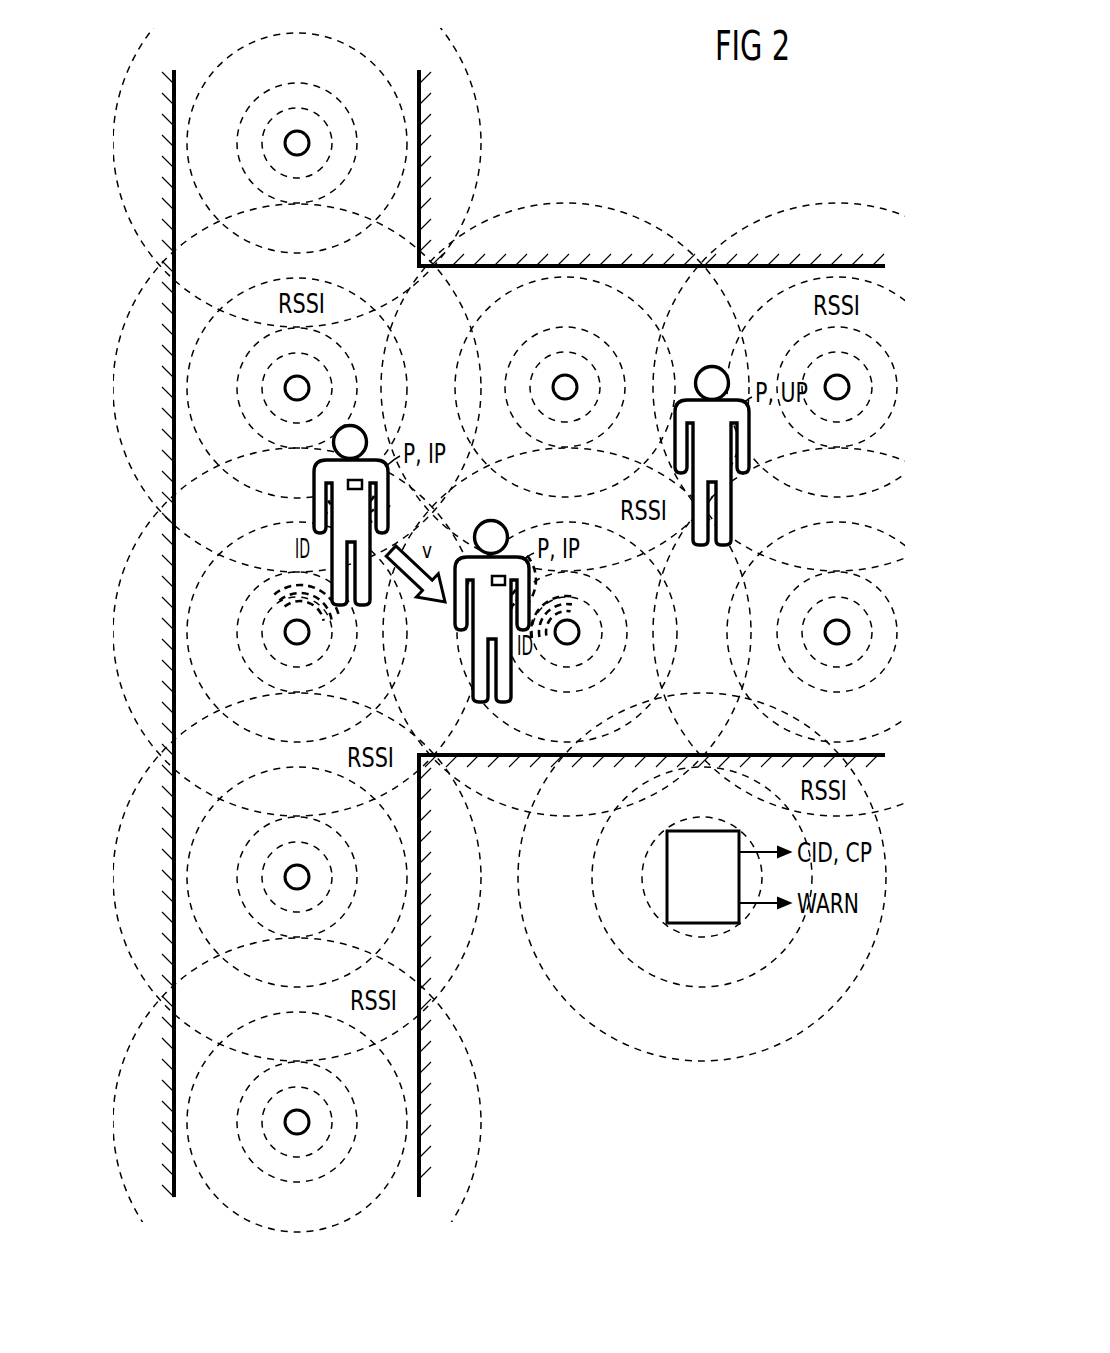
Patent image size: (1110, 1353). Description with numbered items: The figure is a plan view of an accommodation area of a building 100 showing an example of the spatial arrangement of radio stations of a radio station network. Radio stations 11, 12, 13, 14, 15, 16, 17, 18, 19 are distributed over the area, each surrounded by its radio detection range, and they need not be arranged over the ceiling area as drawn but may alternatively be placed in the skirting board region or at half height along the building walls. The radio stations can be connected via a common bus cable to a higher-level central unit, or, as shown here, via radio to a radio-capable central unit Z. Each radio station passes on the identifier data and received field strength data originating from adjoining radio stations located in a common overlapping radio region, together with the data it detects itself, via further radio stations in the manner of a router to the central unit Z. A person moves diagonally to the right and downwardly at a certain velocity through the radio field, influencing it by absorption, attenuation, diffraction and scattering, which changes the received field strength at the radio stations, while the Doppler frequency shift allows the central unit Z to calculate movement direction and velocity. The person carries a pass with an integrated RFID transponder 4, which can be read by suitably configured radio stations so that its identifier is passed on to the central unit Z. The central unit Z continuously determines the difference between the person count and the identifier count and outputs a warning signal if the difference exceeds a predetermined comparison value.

The building 100 is at (677, 155).
The pass with RFID transponder 4 is at (336, 478).
The radio station 11 is at (297, 143).
The radio station 12 is at (297, 388).
The radio station 13 is at (565, 387).
The radio station 14 is at (837, 387).
The radio station 15 is at (297, 632).
The radio station 16 is at (567, 632).
The radio station 17 is at (837, 632).
The radio station 18 is at (297, 877).
The radio station 19 is at (297, 1122).
The central unit Z is at (739, 838).